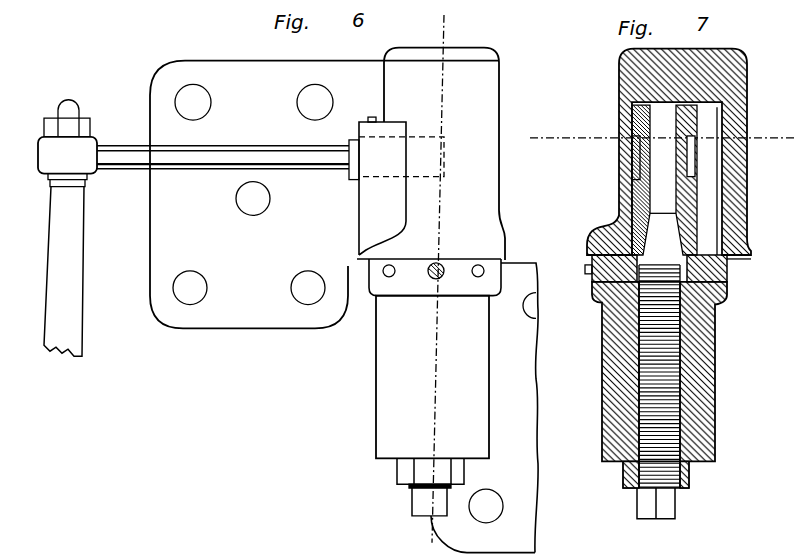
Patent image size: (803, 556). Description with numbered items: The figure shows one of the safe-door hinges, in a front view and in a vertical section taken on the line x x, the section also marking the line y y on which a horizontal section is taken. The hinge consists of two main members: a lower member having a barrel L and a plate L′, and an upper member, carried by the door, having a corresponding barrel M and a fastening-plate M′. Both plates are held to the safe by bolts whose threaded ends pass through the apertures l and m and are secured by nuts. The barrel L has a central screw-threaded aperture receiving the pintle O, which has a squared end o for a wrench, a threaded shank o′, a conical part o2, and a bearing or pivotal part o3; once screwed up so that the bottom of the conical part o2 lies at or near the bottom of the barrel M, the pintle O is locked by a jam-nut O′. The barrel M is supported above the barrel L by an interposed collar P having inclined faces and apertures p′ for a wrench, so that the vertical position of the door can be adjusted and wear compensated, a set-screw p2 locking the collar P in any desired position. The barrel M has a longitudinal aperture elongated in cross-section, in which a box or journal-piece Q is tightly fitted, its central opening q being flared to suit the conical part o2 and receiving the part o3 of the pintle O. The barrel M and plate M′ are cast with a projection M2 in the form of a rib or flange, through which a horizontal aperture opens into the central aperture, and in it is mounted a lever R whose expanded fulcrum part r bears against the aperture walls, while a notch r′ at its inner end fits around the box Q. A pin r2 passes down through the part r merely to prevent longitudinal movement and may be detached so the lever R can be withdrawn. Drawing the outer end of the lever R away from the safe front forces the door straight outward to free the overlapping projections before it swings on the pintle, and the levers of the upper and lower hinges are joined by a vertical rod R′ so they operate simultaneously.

In FIG. 6, the barrel M is at (420, 104).
In FIG. 7, the barrel M is at (611, 114).
In FIG. 6, the fastening-plate M′ is at (244, 111).
In FIG. 6, the projection M2 is at (352, 214).
In FIG. 6, the apertures m is at (221, 243).
In FIG. 6, the lever R is at (189, 153).
In FIG. 6, the vertical rod R′ is at (36, 316).
In FIG. 6, the bearing or fulcrum part r is at (351, 172).
In FIG. 6, the pin r2 is at (364, 113).
In FIG. 7, the notch or recess r′ is at (697, 149).
In FIG. 6, the collar P is at (435, 277).
In FIG. 7, the collar P is at (584, 274).
In FIG. 6, the apertures p′ is at (363, 250).
In FIG. 6, the set-screw p2 is at (401, 250).
In FIG. 7, the set-screw p2 is at (577, 265).
In FIG. 6, the barrel L is at (432, 377).
In FIG. 7, the barrel L is at (594, 420).
In FIG. 6, the plate L′ is at (484, 408).
In FIG. 6, the apertures l is at (502, 408).
In FIG. 6, the squared end o is at (429, 502).
In FIG. 7, the squared end o is at (654, 506).
In FIG. 6, the threaded shank o′ is at (430, 473).
In FIG. 7, the threaded shank o′ is at (674, 373).
In FIG. 7, the pintle O is at (645, 503).
In FIG. 7, the jam-nut O′ is at (681, 475).
In FIG. 7, the conical part o2 is at (663, 231).
In FIG. 7, the bearing or pivotal part o3 is at (664, 180).
In FIG. 7, the box or journal-piece Q is at (611, 194).
In FIG. 7, the central longitudinal opening q is at (678, 98).
In FIG. 6, the section line x x is at (436, 276).
In FIG. 6, the section line y y is at (655, 139).